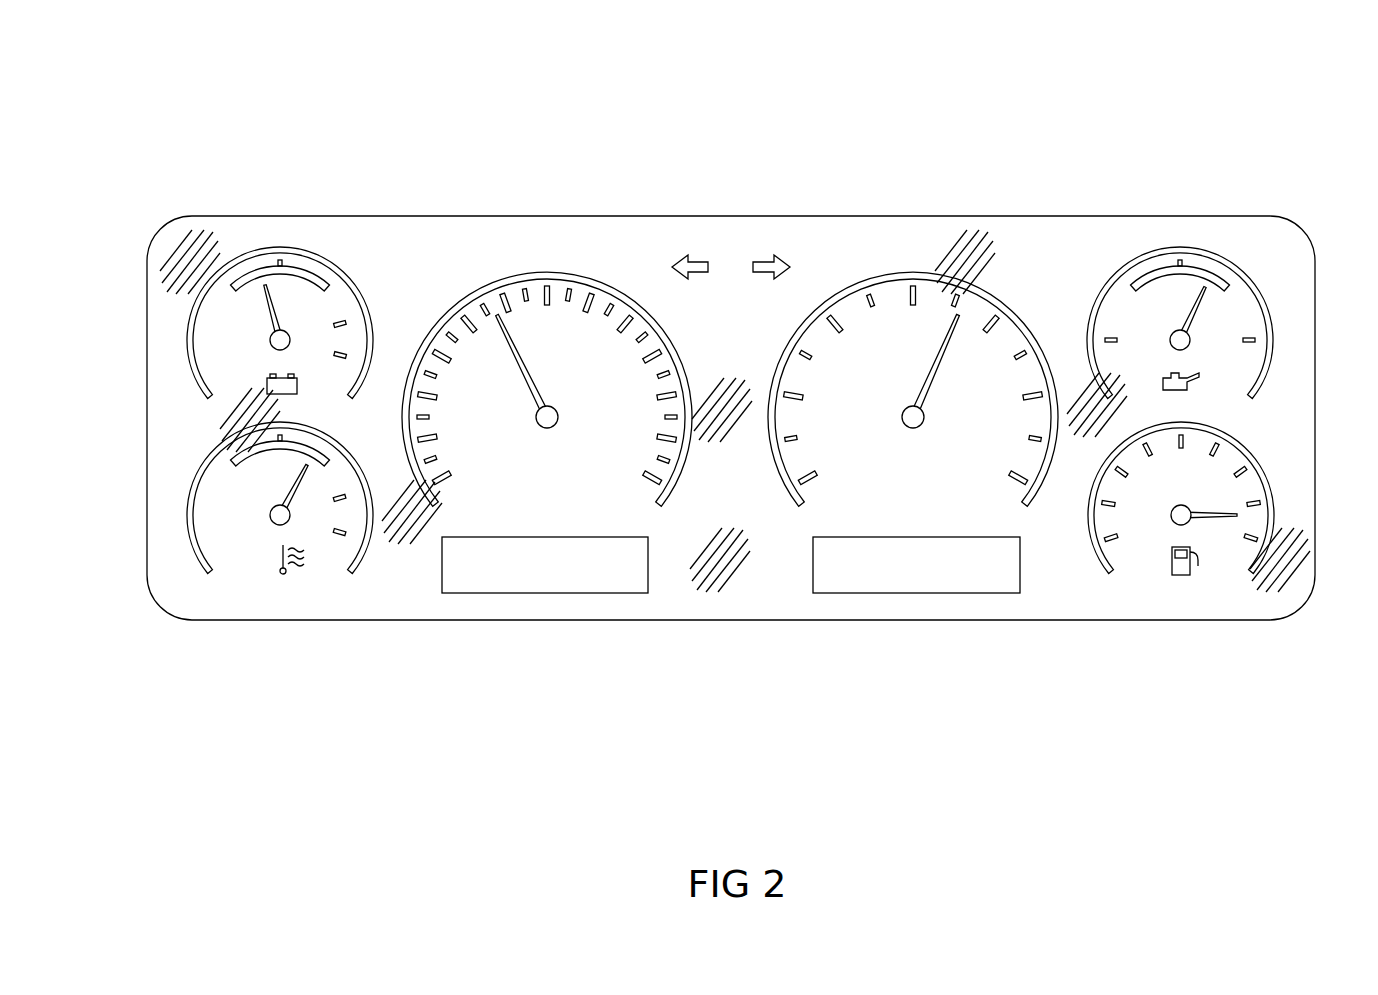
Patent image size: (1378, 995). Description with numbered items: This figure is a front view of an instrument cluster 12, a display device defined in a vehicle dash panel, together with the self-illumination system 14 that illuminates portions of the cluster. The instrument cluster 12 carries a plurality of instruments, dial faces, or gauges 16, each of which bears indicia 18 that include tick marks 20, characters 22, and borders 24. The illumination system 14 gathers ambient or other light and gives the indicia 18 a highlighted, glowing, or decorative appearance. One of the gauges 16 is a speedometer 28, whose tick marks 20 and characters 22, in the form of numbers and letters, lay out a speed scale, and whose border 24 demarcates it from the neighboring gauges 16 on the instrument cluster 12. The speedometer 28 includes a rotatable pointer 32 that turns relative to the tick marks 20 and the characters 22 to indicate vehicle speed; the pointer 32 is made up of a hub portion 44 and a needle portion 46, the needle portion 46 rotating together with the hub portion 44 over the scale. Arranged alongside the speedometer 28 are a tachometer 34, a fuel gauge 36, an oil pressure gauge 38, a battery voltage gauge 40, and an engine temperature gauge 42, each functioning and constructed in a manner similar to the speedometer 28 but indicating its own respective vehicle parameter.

The instrument cluster 12 is at (247, 137).
The self-illumination system 14 is at (426, 258).
The gauges 16 is at (848, 283).
The indicia 18 is at (460, 335).
The tick marks 20 is at (680, 462).
The characters 22 is at (462, 392).
The border 24 is at (590, 283).
The speedometer 28 is at (570, 238).
The pointer 32 is at (744, 401).
The tachometer 34 is at (1010, 240).
The fuel gauge 36 is at (1222, 590).
The oil pressure gauge 38 is at (1277, 303).
The battery voltage gauge 40 is at (178, 350).
The engine temperature gauge 42 is at (178, 560).
The hub portion 44 is at (547, 430).
The needle portion 46 is at (524, 362).